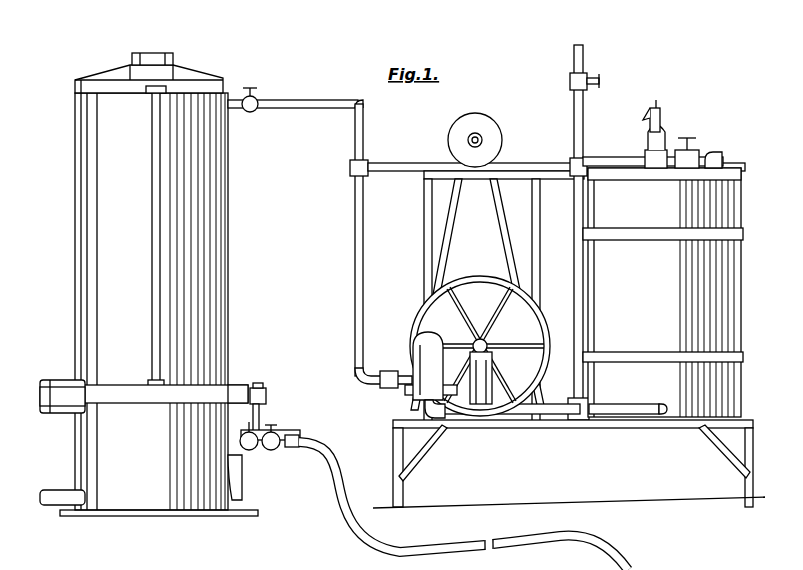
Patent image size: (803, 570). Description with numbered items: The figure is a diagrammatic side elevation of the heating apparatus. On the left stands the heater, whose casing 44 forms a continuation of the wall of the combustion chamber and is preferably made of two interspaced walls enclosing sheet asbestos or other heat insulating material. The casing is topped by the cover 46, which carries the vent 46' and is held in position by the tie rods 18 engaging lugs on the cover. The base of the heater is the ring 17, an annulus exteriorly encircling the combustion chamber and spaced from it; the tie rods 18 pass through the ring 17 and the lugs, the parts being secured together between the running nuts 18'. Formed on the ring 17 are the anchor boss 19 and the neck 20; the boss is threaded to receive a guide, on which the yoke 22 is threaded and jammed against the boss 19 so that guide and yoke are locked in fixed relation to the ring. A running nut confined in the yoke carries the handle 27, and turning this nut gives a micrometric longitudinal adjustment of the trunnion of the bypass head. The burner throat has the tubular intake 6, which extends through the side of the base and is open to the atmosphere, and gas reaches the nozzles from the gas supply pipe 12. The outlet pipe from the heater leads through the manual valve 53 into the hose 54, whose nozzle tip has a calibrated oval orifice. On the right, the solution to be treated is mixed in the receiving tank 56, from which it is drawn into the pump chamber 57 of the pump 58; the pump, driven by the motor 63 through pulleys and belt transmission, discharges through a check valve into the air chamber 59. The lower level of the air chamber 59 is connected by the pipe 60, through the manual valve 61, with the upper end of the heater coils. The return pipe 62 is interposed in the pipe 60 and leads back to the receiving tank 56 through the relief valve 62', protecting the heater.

The tubular intake 6 is at (240, 466).
The gas supply pipe 12 is at (55, 492).
The ring 17 is at (154, 403).
The tie rods 18 is at (146, 235).
The running nuts 18' is at (143, 365).
The anchor boss 19 is at (226, 400).
The neck 20 is at (65, 381).
The yoke 22 is at (262, 392).
The handle 27 is at (262, 413).
The casing 44 is at (95, 232).
The cover 46 is at (162, 68).
The vent 46' is at (152, 48).
The manual valve 53 is at (274, 449).
The hose 54 is at (556, 538).
The receiving tank 56 is at (718, 167).
The pump chamber 57 is at (412, 406).
The pump 58 is at (482, 404).
The air chamber 59 is at (414, 335).
The pipe 60 is at (358, 285).
The manual valve 61 is at (252, 114).
The return pipe 62 is at (556, 149).
The relief valve 62' is at (653, 134).
The motor 63 is at (489, 128).